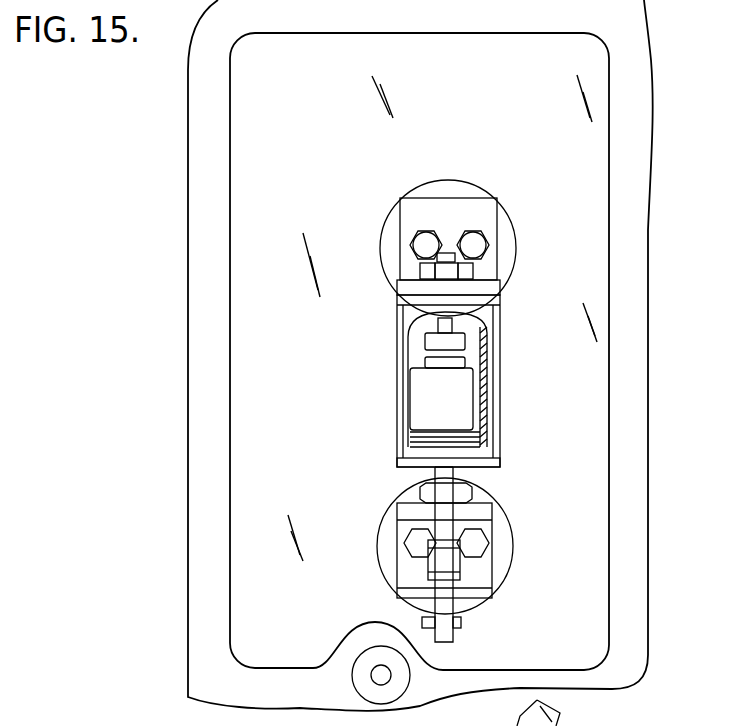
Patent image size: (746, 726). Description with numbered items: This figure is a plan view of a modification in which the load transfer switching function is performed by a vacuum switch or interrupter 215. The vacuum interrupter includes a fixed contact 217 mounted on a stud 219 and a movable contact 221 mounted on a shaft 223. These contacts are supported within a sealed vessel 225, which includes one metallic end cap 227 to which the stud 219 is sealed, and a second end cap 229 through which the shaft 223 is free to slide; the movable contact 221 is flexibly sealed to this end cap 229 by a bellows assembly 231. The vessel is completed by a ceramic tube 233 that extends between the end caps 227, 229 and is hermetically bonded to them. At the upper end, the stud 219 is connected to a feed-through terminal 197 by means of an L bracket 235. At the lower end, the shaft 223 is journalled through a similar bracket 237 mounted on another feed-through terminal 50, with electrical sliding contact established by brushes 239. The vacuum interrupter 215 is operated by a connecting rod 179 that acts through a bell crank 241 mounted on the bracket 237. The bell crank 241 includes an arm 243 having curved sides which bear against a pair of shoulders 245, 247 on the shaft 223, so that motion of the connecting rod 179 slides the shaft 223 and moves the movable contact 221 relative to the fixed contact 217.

The feed-through terminal 197 is at (514, 222).
The stud 219 is at (451, 254).
The end cap 227 is at (400, 300).
The L bracket 235 is at (502, 289).
The sealed vessel 225 is at (502, 312).
The end cap 229 is at (397, 462).
The vacuum switch 215 is at (388, 368).
The fixed contact 217 is at (496, 347).
The movable contact 221 is at (468, 368).
The ceramic tube 233 is at (397, 420).
The bellows assembly 231 is at (466, 450).
The bell crank 241 is at (430, 640).
The shaft 223 is at (457, 475).
The brushes 239 is at (422, 492).
The feed-through terminal 50 is at (513, 570).
The bracket 237 is at (492, 518).
The shoulder 247 is at (412, 551).
The arm 243 is at (428, 570).
The shoulder 245 is at (456, 618).
The connecting rod 179 is at (411, 673).